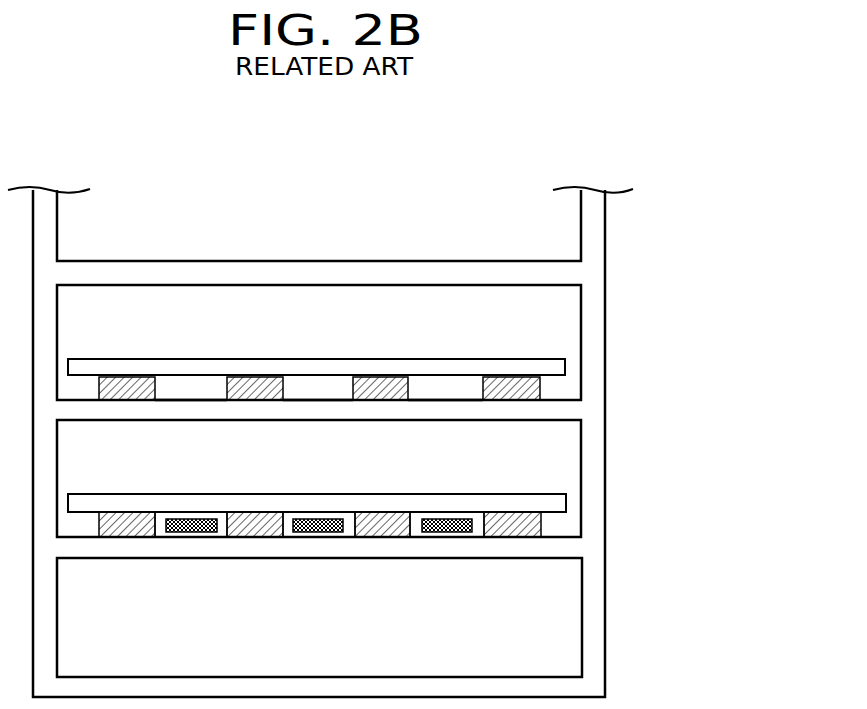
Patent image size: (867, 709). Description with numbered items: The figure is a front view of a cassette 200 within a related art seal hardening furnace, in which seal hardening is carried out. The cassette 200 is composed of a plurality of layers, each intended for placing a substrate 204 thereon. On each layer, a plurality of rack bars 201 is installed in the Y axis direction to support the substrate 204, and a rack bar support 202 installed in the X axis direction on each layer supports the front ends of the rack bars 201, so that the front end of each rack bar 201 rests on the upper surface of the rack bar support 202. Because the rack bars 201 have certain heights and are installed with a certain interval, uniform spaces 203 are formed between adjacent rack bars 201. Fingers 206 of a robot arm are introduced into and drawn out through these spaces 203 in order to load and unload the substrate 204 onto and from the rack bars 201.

The cassette 200 is at (624, 226).
The rack bar 201 is at (530, 375).
The rack bar support 202 is at (554, 411).
The space 203 is at (445, 388).
The substrate 204 is at (506, 368).
The finger 206 is at (457, 517).